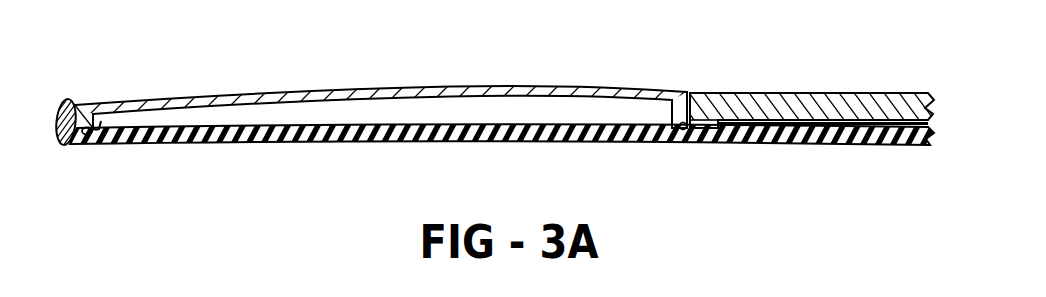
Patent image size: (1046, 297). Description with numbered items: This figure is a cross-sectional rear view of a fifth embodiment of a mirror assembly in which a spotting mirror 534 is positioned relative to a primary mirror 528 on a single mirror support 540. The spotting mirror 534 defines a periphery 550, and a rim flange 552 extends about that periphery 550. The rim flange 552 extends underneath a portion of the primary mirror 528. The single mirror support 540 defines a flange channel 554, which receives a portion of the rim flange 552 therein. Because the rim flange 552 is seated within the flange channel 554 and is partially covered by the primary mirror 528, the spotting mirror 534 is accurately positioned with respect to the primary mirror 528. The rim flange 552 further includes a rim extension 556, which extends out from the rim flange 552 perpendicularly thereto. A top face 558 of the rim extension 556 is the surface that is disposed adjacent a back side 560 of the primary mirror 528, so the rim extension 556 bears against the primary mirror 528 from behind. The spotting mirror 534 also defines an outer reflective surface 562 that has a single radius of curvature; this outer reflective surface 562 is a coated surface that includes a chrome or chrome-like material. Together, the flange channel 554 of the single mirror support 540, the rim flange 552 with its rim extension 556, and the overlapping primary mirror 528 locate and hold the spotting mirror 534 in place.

The primary mirror 528 is at (815, 112).
The spotting mirror 534 is at (380, 79).
The single mirror support 540 is at (210, 145).
The periphery 550 is at (77, 108).
The rim flange 552 is at (107, 112).
The flange channel 554 is at (86, 136).
The rim extension 556 is at (716, 132).
The top face 558 is at (708, 104).
The back side 560 is at (850, 130).
The outer reflective surface 562 is at (282, 90).